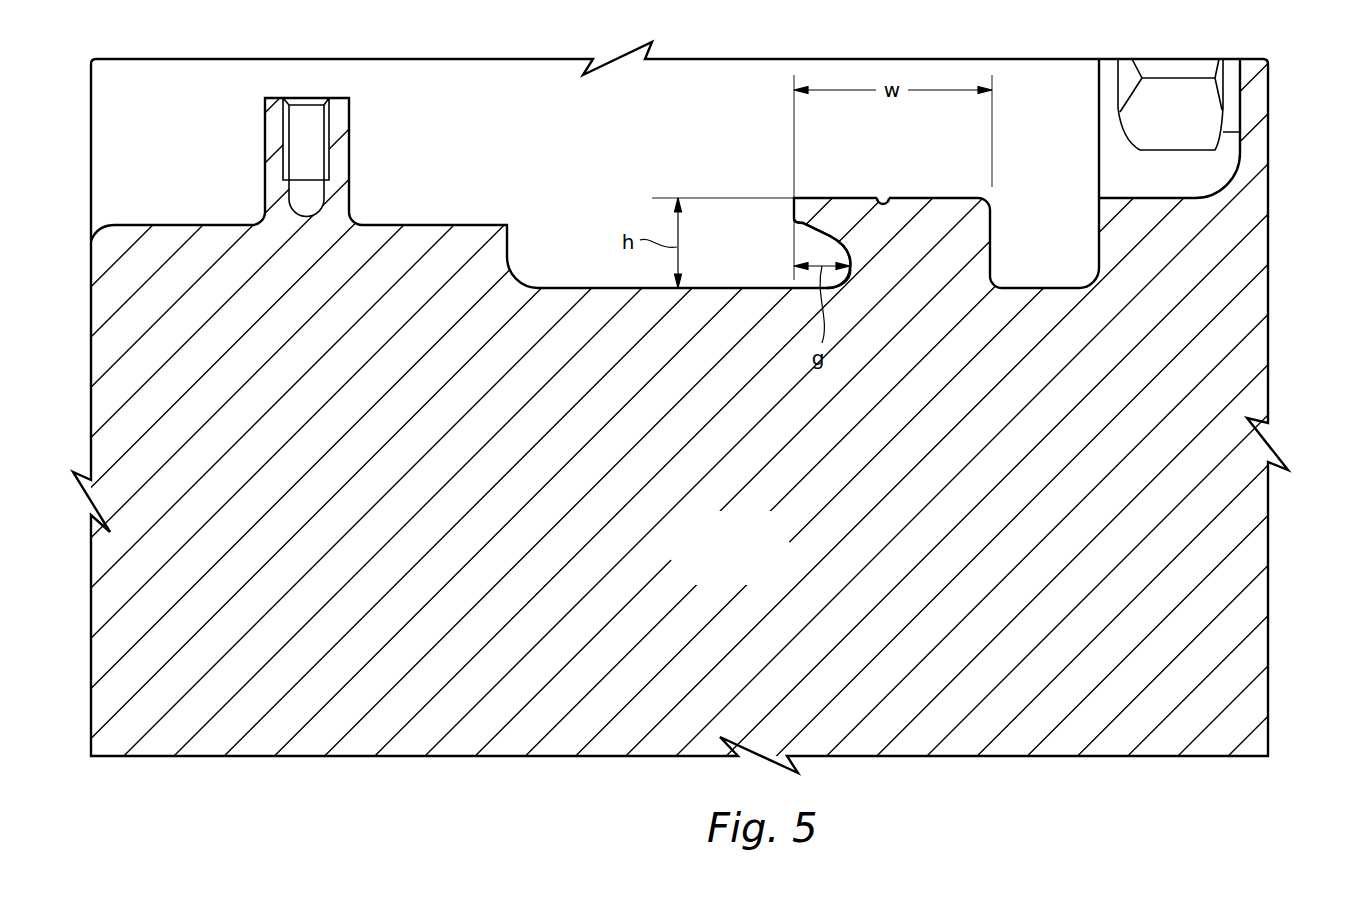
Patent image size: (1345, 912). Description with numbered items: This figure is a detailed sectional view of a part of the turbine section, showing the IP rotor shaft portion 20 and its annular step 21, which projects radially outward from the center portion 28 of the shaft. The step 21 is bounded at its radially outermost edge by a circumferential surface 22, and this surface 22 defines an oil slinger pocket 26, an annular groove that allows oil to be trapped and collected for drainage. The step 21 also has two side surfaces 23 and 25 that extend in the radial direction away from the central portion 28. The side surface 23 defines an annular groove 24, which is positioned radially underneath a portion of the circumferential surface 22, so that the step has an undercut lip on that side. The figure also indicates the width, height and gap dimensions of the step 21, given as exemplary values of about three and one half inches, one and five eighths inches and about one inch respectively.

The IP rotor shaft portion 20 is at (1202, 548).
The annular step 21 is at (937, 233).
The circumferential surface 22 is at (840, 198).
The side surface 23 is at (803, 235).
The annular groove 24 is at (823, 248).
The side surface 25 is at (992, 228).
The oil slinger pocket 26 is at (884, 198).
The center portion 28 is at (767, 561).